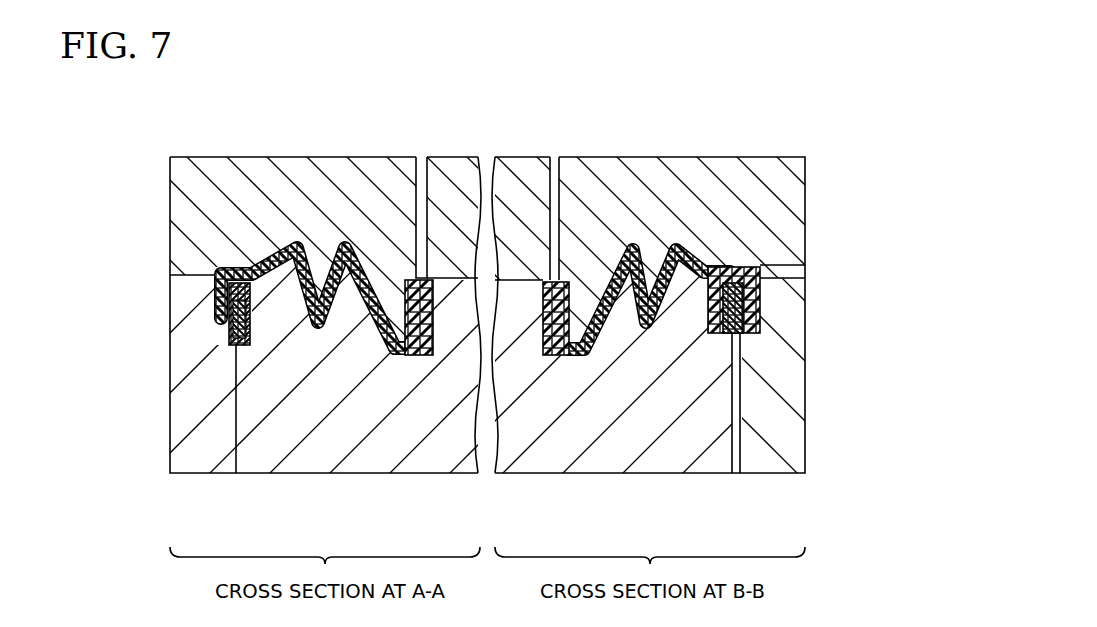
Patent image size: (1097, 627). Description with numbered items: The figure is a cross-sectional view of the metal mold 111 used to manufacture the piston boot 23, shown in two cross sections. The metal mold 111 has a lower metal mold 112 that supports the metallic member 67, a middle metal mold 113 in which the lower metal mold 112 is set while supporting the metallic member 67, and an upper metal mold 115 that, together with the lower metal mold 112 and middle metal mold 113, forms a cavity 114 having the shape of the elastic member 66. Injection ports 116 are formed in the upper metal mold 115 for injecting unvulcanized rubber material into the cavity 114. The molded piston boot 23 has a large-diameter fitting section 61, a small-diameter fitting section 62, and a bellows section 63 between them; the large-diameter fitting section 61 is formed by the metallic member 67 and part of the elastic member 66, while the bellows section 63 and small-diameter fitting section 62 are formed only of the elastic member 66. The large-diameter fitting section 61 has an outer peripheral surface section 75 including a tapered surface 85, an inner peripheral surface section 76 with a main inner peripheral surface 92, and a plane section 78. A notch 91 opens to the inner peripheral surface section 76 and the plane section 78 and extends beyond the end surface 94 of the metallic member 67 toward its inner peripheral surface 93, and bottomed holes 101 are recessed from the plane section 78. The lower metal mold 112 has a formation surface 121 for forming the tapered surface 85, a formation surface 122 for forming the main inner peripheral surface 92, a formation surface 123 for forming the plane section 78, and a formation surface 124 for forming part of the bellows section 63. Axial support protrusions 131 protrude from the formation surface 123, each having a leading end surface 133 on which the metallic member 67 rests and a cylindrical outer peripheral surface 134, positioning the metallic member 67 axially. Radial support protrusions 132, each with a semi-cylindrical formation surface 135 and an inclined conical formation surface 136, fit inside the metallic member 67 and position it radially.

The metal mold 111 is at (830, 150).
The middle metal mold 113 is at (821, 446).
The upper metal mold 115 is at (821, 207).
The injection port 116 is at (418, 185).
The piston boot 23 is at (345, 232).
The elastic member 66 is at (300, 243).
The small-diameter fitting section 62 is at (565, 284).
The cavity 114 is at (633, 243).
The bellows section 63 is at (680, 245).
The metallic member 67 is at (730, 268).
The large-diameter fitting section 61 is at (760, 268).
The outer peripheral surface section 75 is at (735, 278).
The leading end surface 133 is at (745, 312).
The outer peripheral surface 134 is at (750, 322).
The tapered surface 85 is at (752, 338).
The formation surface 124 is at (252, 240).
The formation surface 122 is at (245, 270).
The formation surface 136 is at (235, 295).
The formation surface 135 is at (228, 318).
The formation surface 121 is at (228, 327).
The formation surface 123 is at (232, 362).
The end surface 94 is at (250, 352).
The radial support protrusion 132 is at (265, 325).
The notch 91 is at (268, 338).
The lower metal mold 112 is at (533, 432).
The inner peripheral surface section 76 is at (645, 330).
The main inner peripheral surface 92 is at (690, 300).
The inner peripheral surface 93 is at (703, 290).
The axial support protrusion 131 is at (722, 300).
The hole 101 is at (735, 300).
The plane section 78 is at (742, 345).